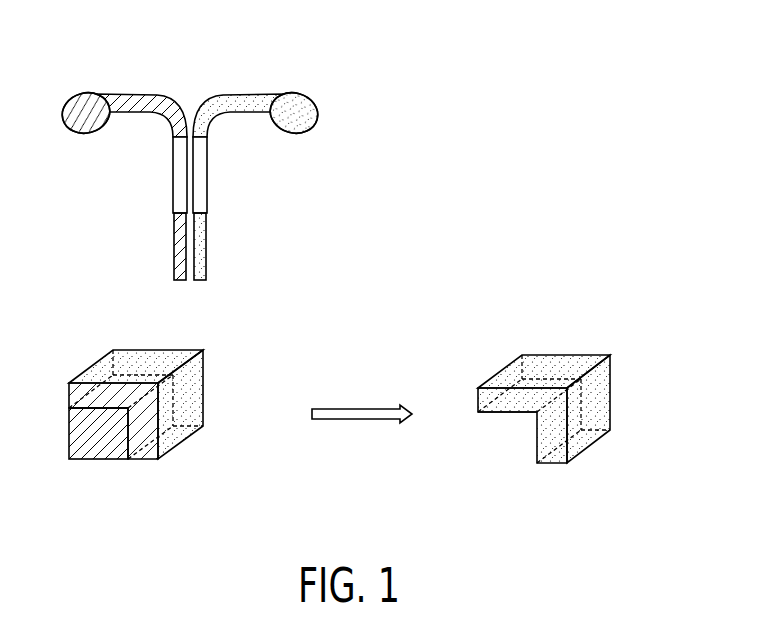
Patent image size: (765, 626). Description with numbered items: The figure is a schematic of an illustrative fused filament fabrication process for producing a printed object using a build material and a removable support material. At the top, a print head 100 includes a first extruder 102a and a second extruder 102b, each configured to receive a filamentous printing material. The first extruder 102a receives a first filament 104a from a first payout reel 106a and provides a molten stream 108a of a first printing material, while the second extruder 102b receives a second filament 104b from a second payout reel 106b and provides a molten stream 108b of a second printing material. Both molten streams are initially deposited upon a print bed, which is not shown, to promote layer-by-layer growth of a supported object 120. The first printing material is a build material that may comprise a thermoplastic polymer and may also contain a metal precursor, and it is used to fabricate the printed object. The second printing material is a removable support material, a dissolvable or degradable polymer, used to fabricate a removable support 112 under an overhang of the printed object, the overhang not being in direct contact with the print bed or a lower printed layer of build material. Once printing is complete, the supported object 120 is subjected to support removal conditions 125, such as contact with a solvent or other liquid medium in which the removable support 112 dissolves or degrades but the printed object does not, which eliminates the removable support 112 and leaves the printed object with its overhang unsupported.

The print head 100 is at (118, 173).
The first extruder 102a is at (205, 192).
The second extruder 102b is at (175, 192).
The first filament 104a is at (233, 102).
The second filament 104b is at (143, 102).
The first payout reel 106a is at (297, 102).
The second payout reel 106b is at (83, 102).
The molten stream 108a is at (205, 243).
The molten stream 108b is at (177, 243).
The removable support 112 is at (107, 460).
The supported object 120 is at (210, 381).
The support removal conditions 125 is at (360, 408).